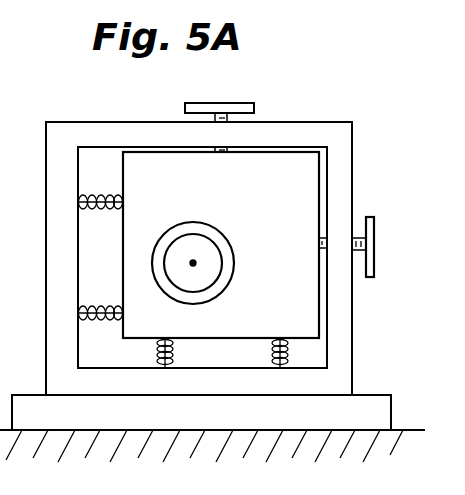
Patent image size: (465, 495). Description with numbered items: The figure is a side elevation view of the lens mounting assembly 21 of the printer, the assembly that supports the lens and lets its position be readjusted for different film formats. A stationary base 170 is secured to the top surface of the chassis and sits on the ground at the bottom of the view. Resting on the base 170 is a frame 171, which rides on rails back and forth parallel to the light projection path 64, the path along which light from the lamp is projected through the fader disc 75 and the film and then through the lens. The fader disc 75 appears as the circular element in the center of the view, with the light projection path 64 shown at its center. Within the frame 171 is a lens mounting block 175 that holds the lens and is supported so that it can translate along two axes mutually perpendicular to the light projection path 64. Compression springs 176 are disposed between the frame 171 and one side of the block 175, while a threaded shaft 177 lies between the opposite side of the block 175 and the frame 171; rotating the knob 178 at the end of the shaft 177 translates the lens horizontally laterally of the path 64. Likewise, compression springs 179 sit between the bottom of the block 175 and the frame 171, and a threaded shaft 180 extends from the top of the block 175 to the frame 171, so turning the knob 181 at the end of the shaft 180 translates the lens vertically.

The lens mounting assembly 21 is at (354, 122).
The light projection path 64 is at (195, 266).
The fader disc 75 is at (231, 238).
The stationary base 170 is at (382, 395).
The frame 171 is at (94, 121).
The lens mounting block 175 is at (123, 240).
The compression springs 176 is at (110, 173).
The threaded shaft 177 is at (356, 237).
The knob 178 is at (375, 216).
The compression springs 179 is at (266, 357).
The threaded shaft 180 is at (228, 150).
The knob 181 is at (221, 103).